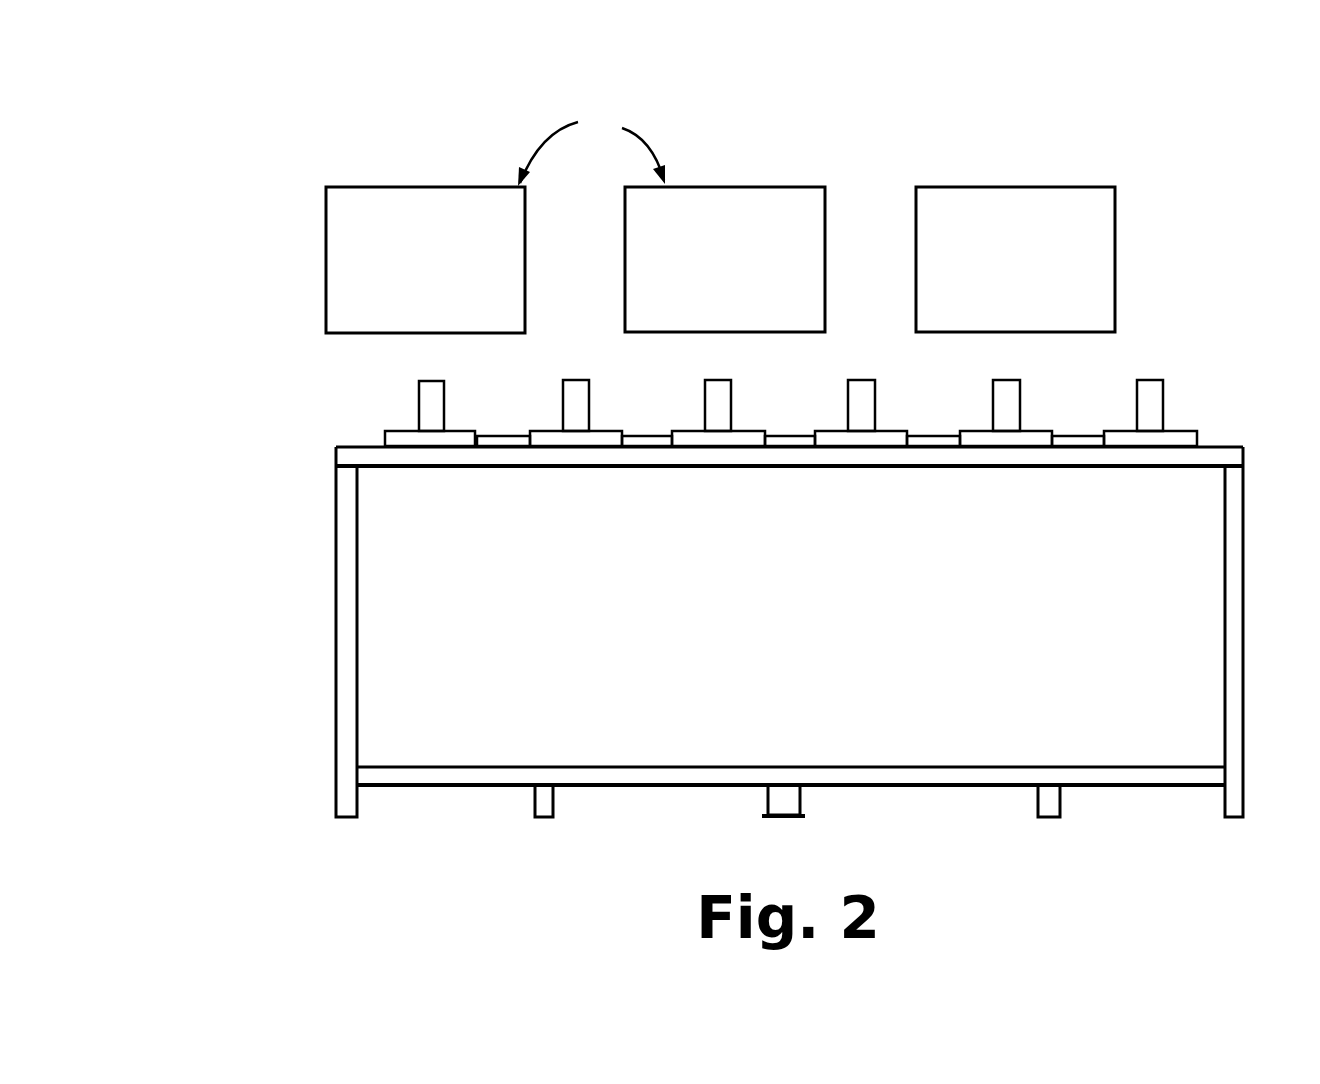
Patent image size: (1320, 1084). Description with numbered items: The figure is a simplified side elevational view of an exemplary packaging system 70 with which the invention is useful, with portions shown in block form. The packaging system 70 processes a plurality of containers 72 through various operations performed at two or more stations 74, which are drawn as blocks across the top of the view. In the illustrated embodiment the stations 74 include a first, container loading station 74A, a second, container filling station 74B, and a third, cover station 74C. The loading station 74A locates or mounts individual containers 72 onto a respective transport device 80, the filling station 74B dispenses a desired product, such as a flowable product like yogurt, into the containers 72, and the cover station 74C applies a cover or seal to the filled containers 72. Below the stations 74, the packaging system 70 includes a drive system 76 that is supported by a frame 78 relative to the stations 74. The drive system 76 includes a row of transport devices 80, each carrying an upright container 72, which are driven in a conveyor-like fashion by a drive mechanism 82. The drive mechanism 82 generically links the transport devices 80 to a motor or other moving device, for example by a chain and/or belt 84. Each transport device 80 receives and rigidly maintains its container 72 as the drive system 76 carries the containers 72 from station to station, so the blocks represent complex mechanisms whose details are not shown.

The packaging system 70 is at (485, 85).
The containers 72 is at (438, 402).
The stations 74 is at (591, 142).
The container loading station 74A is at (318, 252).
The container filling station 74B is at (781, 180).
The cover station 74C is at (1128, 246).
The drive system 76 is at (860, 452).
The frame 78 is at (325, 648).
The transport device 80 is at (400, 438).
The drive mechanism 82 is at (942, 452).
The chain and/or belt 84 is at (1077, 434).